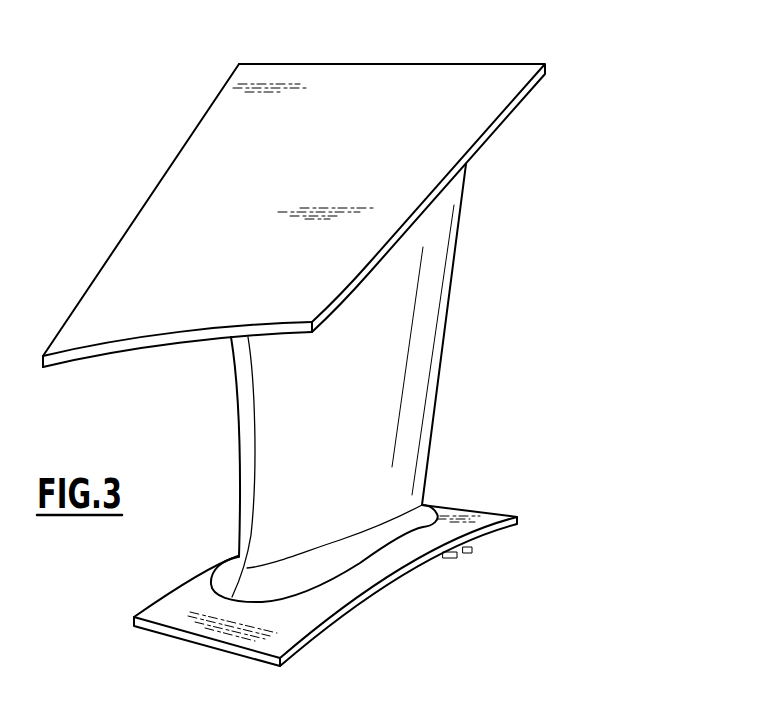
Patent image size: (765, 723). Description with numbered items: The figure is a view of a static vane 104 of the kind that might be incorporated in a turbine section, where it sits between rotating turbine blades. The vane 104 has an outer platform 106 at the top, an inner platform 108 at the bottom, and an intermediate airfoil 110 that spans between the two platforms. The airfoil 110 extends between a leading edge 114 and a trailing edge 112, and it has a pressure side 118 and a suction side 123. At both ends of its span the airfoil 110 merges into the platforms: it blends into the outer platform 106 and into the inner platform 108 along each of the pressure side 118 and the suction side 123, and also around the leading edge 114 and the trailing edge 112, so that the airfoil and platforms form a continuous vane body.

The static vane 104 is at (370, 366).
The outer platform 106 is at (453, 97).
The inner platform 108 is at (390, 558).
The airfoil 110 is at (405, 435).
The trailing edge 112 is at (452, 300).
The leading edge 114 is at (248, 435).
The pressure side 118 is at (500, 130).
The suction side 123 is at (162, 183).